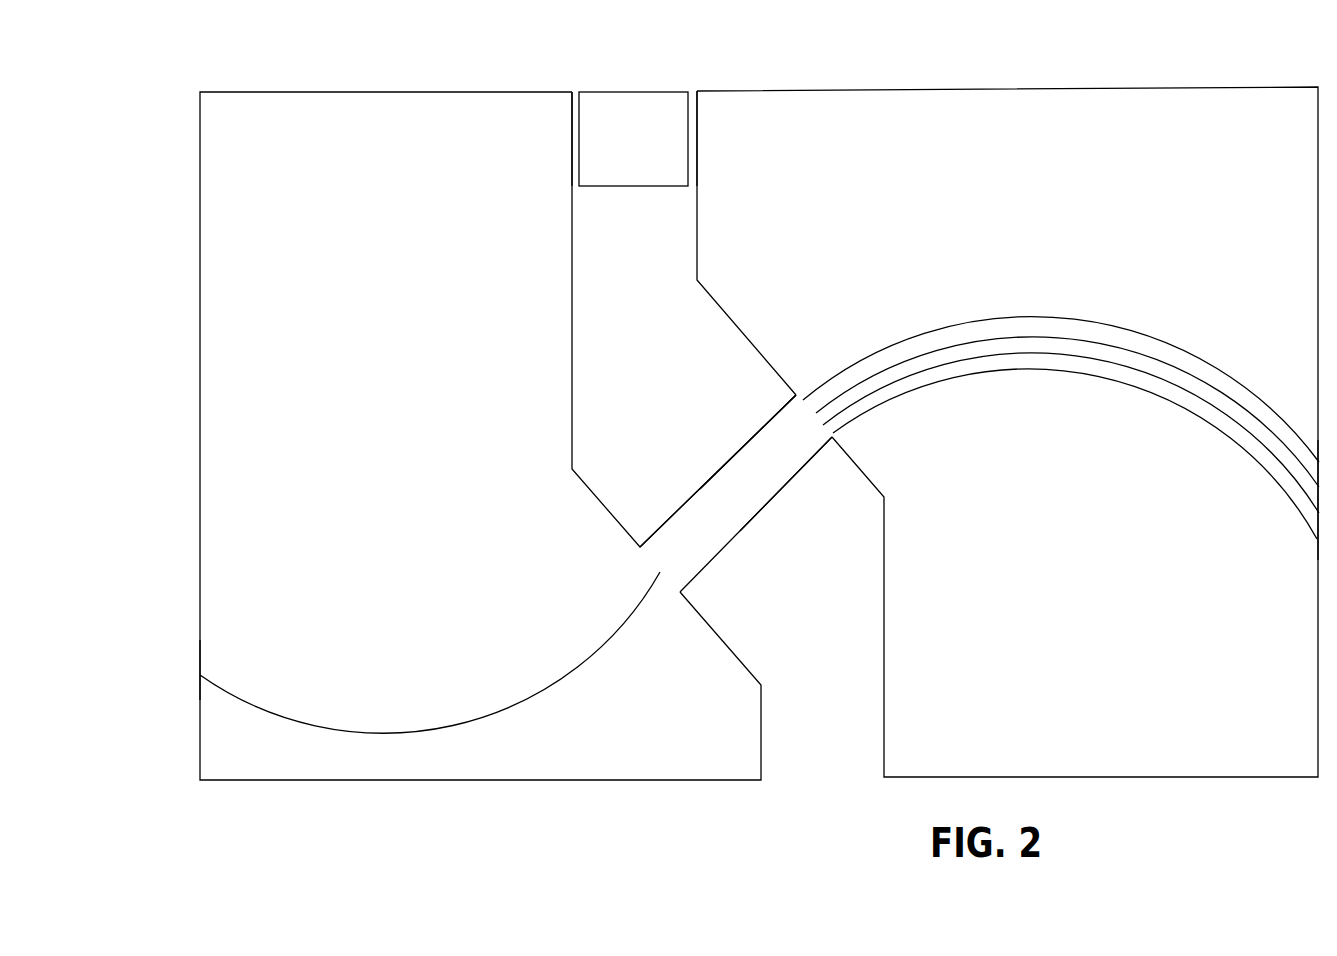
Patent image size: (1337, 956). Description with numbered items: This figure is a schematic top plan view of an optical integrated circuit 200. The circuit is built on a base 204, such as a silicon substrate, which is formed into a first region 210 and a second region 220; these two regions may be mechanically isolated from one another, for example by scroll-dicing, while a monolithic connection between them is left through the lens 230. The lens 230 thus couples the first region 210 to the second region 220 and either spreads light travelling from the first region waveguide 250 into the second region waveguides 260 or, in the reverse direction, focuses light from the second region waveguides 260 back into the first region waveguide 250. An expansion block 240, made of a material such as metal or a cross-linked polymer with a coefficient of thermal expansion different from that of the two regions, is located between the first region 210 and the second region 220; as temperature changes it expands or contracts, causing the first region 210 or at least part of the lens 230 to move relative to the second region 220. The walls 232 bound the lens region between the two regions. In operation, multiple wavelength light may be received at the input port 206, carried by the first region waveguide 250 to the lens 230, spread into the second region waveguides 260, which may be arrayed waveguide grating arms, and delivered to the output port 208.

The optical integrated circuit 200 is at (1255, 43).
The base 204 is at (646, 112).
The input port 206 is at (244, 642).
The output port 208 is at (1251, 507).
The first region 210 is at (498, 459).
The second region 220 is at (1007, 458).
The lens 230 is at (736, 481).
The channel side walls 232 is at (723, 509).
The expansion block 240 is at (633, 166).
The first region waveguide 250 is at (430, 652).
The second region waveguide 260 is at (1061, 412).